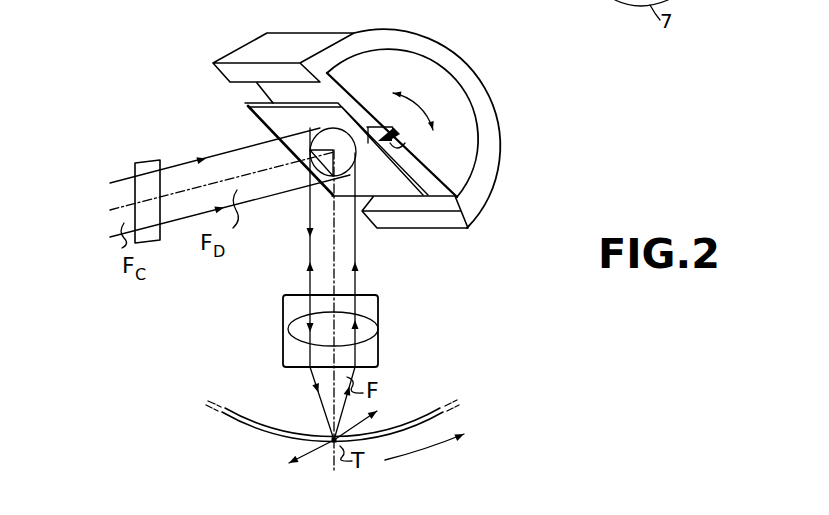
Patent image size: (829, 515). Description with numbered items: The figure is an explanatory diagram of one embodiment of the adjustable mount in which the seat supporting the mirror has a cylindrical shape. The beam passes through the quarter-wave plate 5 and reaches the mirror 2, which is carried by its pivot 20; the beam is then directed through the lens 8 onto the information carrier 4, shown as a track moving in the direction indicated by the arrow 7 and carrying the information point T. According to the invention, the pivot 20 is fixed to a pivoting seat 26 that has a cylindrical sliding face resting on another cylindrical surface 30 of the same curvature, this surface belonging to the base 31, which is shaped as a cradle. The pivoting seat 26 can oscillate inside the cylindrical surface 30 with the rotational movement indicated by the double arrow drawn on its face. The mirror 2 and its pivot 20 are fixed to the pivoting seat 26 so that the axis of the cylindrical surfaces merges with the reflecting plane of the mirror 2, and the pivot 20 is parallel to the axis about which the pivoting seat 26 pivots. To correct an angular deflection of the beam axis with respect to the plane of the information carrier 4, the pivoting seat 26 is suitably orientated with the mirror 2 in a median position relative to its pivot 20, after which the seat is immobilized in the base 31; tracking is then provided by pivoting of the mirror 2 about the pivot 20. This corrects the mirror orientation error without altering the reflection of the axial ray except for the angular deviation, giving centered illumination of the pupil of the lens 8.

The mirror 2 is at (270, 113).
The information carrier 4 is at (260, 432).
The quarter-wave plate 5 is at (190, 118).
The arrow 7 is at (433, 447).
The lens 8 is at (380, 311).
The pivot 20 is at (410, 153).
The pivoting seat 26 is at (362, 93).
The cylindrical surface 30 is at (445, 203).
The base 31 is at (473, 92).